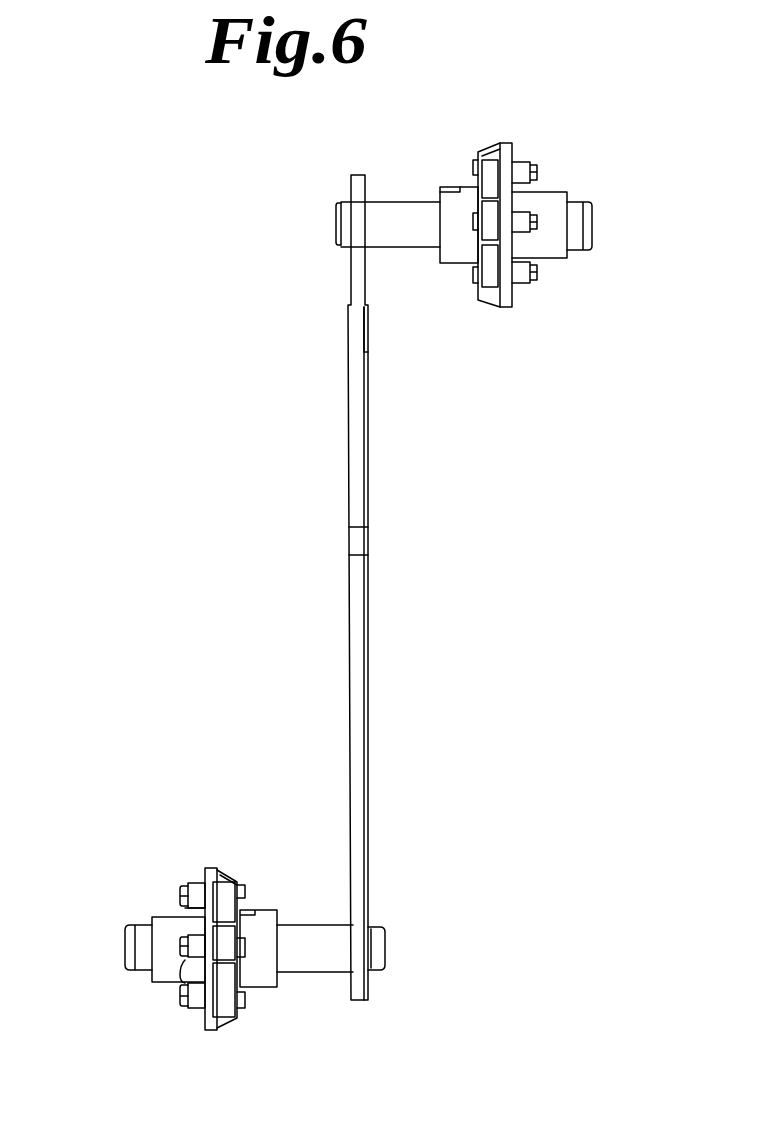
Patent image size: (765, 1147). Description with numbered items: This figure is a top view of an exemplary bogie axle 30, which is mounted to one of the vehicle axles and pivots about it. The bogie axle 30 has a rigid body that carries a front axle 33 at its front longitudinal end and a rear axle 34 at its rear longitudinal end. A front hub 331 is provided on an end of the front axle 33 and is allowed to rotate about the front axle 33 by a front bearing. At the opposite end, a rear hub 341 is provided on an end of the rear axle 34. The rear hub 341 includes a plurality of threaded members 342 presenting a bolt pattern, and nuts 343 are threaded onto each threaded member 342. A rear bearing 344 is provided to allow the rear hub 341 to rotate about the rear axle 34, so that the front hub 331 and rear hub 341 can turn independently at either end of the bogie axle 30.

The bogie axle 30 is at (362, 603).
The front axle 33 is at (590, 223).
The front hub 331 is at (490, 152).
The rear axle 34 is at (130, 943).
The rear hub 341 is at (207, 870).
The threaded members 342 is at (181, 943).
The nuts 343 is at (192, 886).
The rear bearing 344 is at (148, 973).